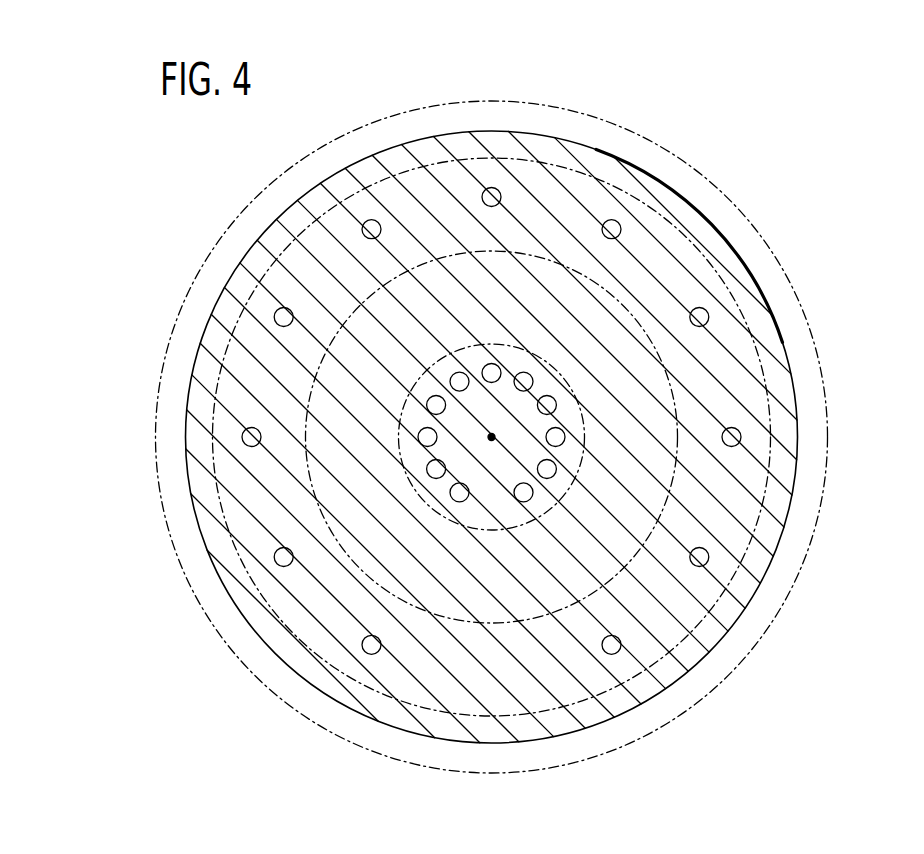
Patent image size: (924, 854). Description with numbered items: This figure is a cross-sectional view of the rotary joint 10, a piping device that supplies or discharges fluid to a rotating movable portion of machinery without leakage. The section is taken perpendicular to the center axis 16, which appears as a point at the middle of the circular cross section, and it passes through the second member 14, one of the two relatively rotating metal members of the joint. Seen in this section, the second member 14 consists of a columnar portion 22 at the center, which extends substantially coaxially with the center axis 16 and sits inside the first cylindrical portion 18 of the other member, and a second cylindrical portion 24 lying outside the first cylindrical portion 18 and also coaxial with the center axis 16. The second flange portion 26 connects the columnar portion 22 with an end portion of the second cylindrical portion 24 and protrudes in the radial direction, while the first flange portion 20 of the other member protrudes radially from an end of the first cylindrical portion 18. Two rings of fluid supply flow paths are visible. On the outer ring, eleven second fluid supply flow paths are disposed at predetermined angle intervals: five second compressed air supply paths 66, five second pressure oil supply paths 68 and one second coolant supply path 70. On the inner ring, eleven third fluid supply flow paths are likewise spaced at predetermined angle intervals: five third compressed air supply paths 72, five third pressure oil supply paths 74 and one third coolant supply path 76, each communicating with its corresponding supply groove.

The rotary joint 10 is at (747, 97).
The second member 14 is at (581, 129).
The center axis 16 is at (492, 437).
The first cylindrical portion 18 is at (322, 517).
The first flange portion 20 is at (697, 171).
The columnar portion 22 is at (423, 505).
The second cylindrical portion 24 is at (385, 694).
The second flange portion 26 is at (727, 233).
The second compressed air supply paths 66 is at (252, 437).
The second pressure oil supply paths 68 is at (372, 229).
The second coolant supply path 70 is at (284, 317).
The third compressed air supply paths 72 is at (492, 373).
The third pressure oil supply paths 74 is at (460, 492).
The third coolant supply path 76 is at (436, 405).